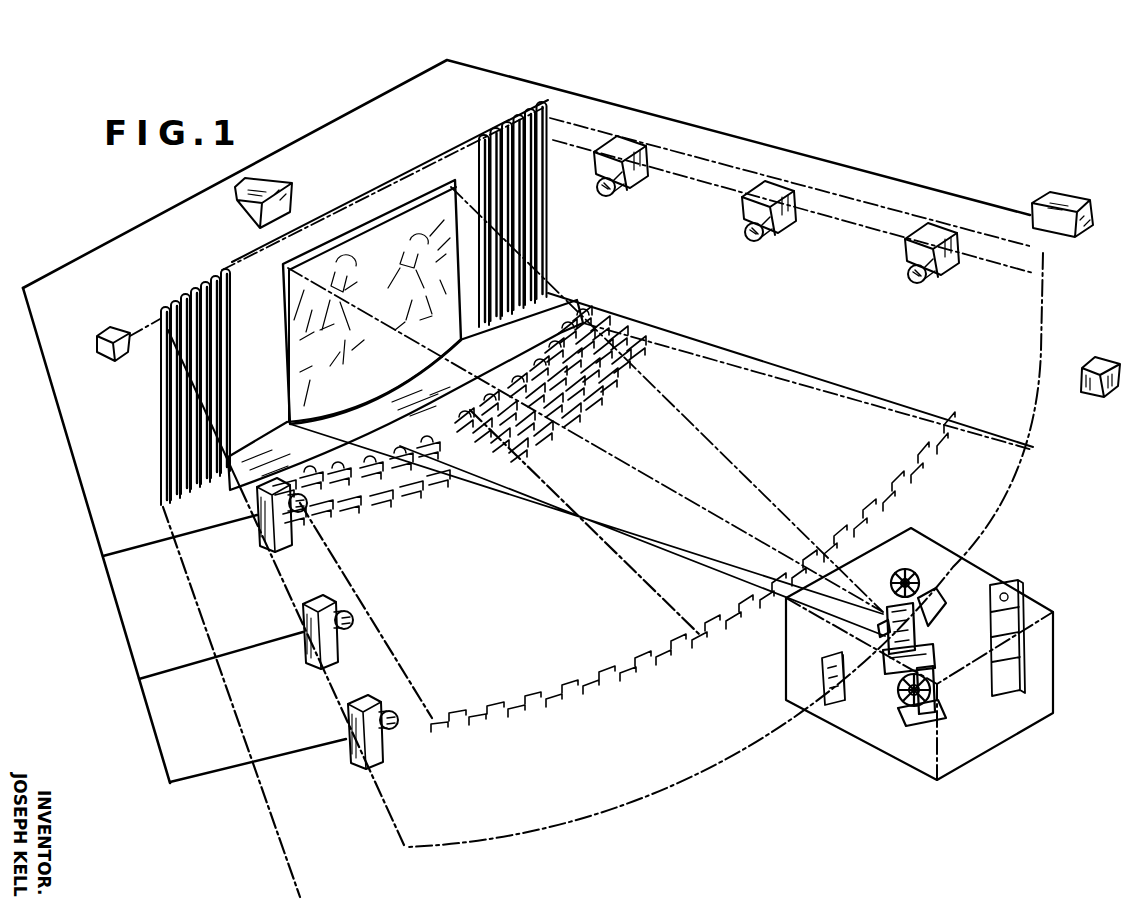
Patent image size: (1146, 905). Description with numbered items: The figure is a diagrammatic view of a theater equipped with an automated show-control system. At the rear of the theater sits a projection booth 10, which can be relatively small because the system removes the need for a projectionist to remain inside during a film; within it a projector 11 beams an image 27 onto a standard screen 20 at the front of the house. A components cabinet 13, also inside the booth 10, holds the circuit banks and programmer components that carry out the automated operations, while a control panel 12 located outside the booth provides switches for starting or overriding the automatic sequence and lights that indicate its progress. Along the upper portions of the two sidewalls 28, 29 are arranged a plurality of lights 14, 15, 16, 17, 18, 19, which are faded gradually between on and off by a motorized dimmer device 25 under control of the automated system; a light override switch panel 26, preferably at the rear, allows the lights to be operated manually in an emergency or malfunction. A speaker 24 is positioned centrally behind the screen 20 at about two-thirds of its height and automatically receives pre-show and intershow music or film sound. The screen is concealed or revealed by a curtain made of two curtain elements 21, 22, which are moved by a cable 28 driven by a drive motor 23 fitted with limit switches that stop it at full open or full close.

The projection booth 10 is at (1088, 640).
The projector 11 is at (920, 606).
The control panel 12 is at (826, 696).
The components cabinet 13 is at (1021, 604).
The light 14 is at (348, 727).
The light 15 is at (304, 632).
The light 16 is at (260, 536).
The light 17 is at (630, 140).
The light 18 is at (780, 185).
The light 19 is at (938, 228).
The screen 20 is at (370, 206).
The curtain element 21 is at (161, 410).
The curtain element 22 is at (550, 104).
The drive motor 23 is at (102, 332).
The speaker 24 is at (236, 186).
The motorized dimmer device 25 is at (1072, 199).
The light override switch panel 26 is at (1104, 394).
The image 27 is at (372, 313).
The sidewall 28 is at (273, 797).
The sidewall 29 is at (807, 311).